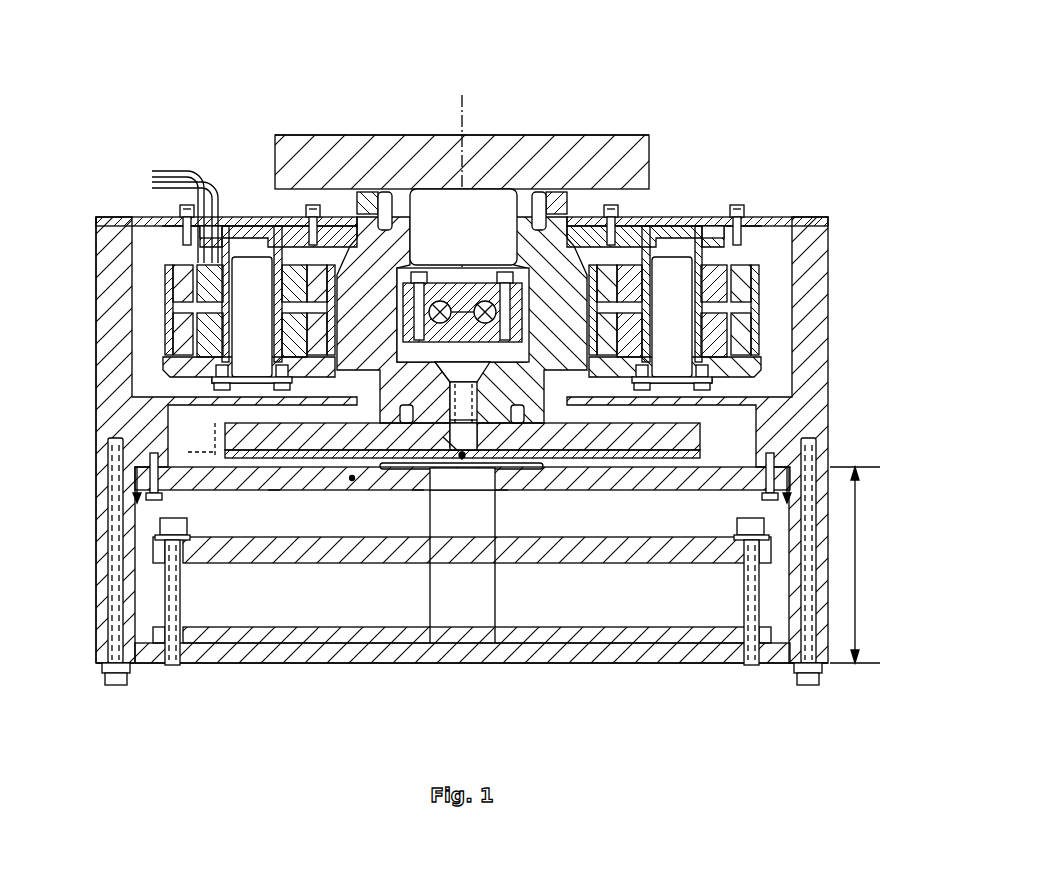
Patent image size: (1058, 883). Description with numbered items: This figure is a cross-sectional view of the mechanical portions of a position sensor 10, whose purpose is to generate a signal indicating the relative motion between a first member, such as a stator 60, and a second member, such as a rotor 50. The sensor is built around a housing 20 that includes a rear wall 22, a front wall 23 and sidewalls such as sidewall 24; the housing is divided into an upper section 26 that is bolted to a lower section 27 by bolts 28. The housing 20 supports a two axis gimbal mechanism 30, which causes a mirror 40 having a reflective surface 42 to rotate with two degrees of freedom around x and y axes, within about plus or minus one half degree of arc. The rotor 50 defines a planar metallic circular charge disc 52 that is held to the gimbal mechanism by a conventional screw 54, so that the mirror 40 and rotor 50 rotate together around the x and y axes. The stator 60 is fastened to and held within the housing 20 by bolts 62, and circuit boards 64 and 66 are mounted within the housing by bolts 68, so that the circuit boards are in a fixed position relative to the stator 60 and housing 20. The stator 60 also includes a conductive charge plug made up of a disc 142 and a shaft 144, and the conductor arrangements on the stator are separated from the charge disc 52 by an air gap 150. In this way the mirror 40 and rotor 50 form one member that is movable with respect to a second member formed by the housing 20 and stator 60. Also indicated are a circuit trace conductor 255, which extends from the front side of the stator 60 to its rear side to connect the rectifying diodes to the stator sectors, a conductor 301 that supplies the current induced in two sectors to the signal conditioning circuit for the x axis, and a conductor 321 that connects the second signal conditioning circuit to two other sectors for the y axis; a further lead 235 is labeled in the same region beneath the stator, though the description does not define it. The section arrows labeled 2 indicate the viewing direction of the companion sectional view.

The position sensor 10 is at (727, 38).
The housing 20 is at (96, 270).
The rear wall 22 is at (530, 664).
The front wall 23 is at (757, 217).
The sidewall 24 is at (96, 383).
The upper section 26 is at (828, 270).
The lower section 27 is at (335, 664).
The bolts 28 is at (118, 682).
The two axis gimbal mechanism 30 is at (187, 268).
The mirror 40 is at (493, 148).
The reflective surface 42 is at (590, 137).
The rotor 50 is at (702, 428).
The charge disc 52 is at (702, 458).
The screw 54 is at (447, 362).
The stator 60 is at (672, 490).
The bolts 62 is at (162, 498).
The circuit board 64 is at (622, 537).
The circuit board 66 is at (628, 628).
The bolts 68 is at (175, 666).
The disc 142 is at (535, 470).
The shaft 144 is at (462, 492).
The air gap 150 is at (222, 463).
The position 235 is at (498, 492).
The circuit trace conductor 255 is at (276, 490).
The conductor 301 is at (352, 480).
The conductor 321 is at (418, 487).
The section view direction 2 is at (462, 497).